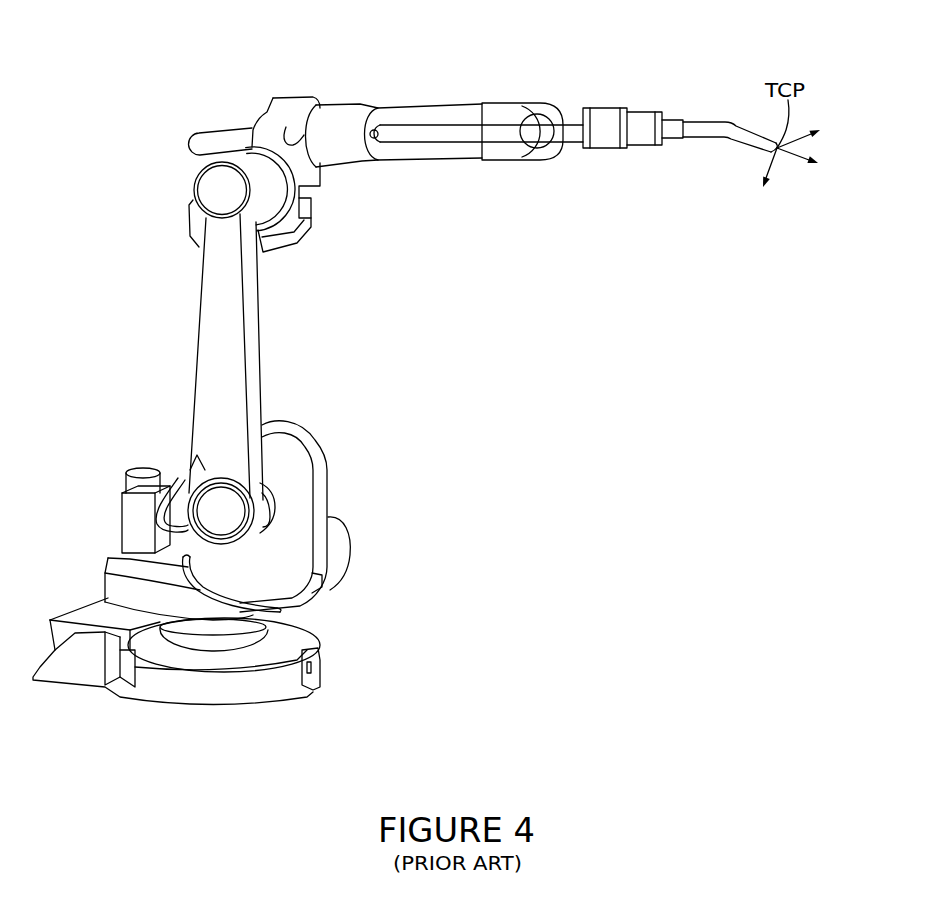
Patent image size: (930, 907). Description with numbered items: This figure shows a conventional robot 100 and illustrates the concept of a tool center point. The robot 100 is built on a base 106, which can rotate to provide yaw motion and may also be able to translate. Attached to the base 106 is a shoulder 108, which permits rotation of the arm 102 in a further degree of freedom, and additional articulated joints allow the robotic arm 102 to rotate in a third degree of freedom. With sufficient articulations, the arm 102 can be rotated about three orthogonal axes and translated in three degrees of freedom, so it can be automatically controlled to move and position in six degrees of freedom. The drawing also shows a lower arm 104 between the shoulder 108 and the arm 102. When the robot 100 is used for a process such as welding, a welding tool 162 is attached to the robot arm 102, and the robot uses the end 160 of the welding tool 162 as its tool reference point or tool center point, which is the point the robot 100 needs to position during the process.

The robot 100 is at (86, 490).
The arm 102 is at (462, 112).
The lower arm 104 is at (185, 256).
The base 106 is at (330, 518).
The shoulder 108 is at (208, 482).
The end of the welding tool 160 is at (752, 128).
The welding tool 162 is at (642, 118).